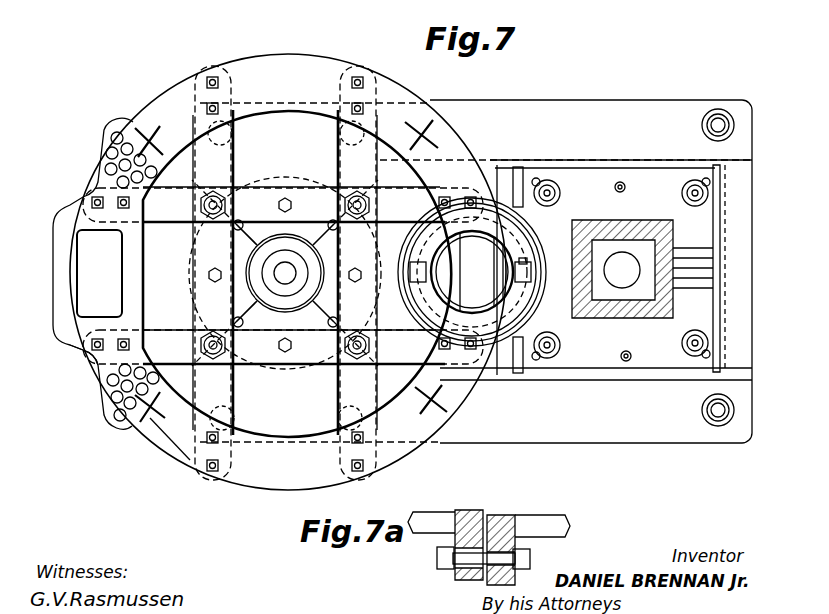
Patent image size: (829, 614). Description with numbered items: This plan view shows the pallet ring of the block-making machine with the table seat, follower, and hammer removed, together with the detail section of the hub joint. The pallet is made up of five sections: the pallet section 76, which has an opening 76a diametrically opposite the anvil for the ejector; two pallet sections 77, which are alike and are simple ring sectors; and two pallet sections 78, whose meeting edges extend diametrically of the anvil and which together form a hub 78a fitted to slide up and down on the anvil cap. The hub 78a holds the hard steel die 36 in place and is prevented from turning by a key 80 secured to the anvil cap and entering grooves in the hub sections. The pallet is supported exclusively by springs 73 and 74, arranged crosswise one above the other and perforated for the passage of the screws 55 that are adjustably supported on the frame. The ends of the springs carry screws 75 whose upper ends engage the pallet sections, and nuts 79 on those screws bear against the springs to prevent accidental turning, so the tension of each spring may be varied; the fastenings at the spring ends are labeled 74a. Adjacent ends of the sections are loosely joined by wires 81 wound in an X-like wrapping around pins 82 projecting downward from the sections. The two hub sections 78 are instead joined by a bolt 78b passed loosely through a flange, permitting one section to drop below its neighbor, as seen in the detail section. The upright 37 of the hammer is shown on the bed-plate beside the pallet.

In FIG. 7, the pallet section 77 is at (411, 272).
In FIG. 7, the screw 55 is at (330, 162).
In FIG. 7, the spring 74 is at (432, 200).
In FIG. 7, the arm fastener 74a is at (444, 278).
In FIG. 7, the spring 73 is at (285, 273).
In FIG. 7, the die 36 is at (472, 272).
In FIG. 7, the key 80 is at (523, 284).
In FIG. 7, the upright 37 is at (612, 318).
In FIG. 7, the pallet section 78 is at (448, 148).
In FIG. 7A, the hub 78a is at (440, 516).
In FIG. 7A, the bolt 78b is at (470, 582).
In FIG. 7, the pin 82 is at (140, 424).
In FIG. 7, the wire 81 is at (168, 452).
In FIG. 7, the pallet section 76 is at (52, 278).
In FIG. 7, the opening 76a is at (99, 273).
In FIG. 7, the nut 79 is at (132, 346).
In FIG. 7, the screw 75 is at (90, 356).